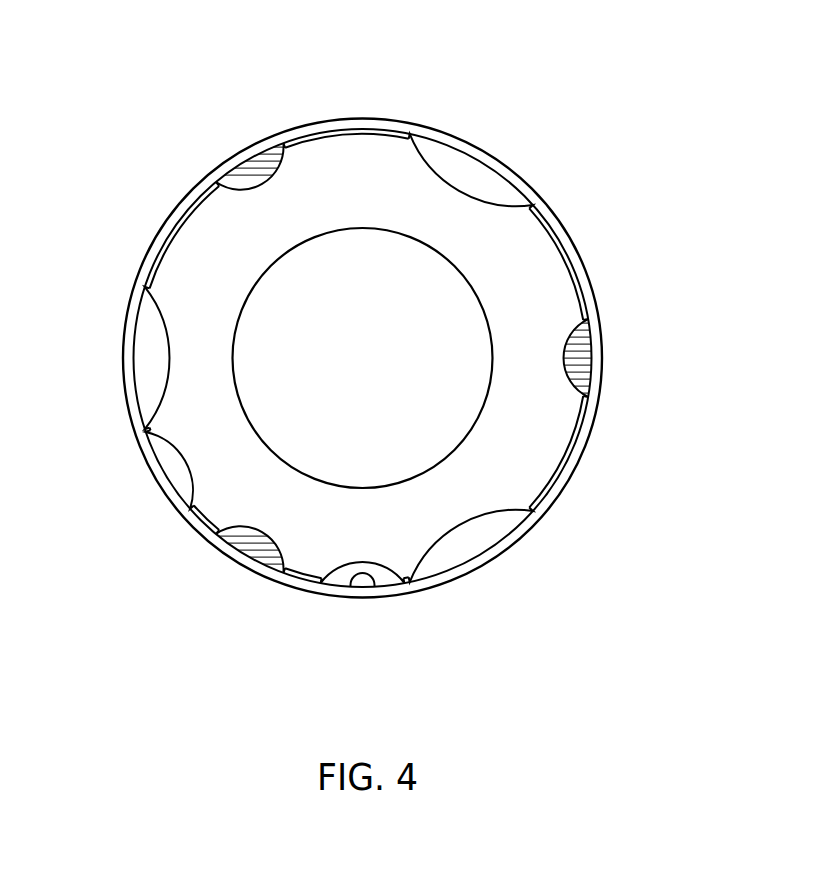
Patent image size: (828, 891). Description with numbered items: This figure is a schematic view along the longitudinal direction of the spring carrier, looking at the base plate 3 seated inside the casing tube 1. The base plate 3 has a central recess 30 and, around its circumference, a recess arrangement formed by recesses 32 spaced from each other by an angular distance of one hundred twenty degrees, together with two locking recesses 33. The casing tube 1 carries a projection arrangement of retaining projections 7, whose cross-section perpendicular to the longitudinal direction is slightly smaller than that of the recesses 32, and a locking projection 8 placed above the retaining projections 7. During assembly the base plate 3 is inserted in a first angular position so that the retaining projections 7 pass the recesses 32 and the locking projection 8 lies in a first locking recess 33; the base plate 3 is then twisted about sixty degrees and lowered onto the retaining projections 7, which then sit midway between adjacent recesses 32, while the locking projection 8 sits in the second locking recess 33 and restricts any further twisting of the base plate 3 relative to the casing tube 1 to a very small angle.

The casing tube 1 is at (485, 148).
The base plate 3 is at (548, 288).
The retaining projection 7 is at (262, 162).
The locking projection 8 is at (362, 584).
The recess 30 is at (370, 275).
The recess 32 is at (474, 182).
The locking recess 33 is at (173, 462).